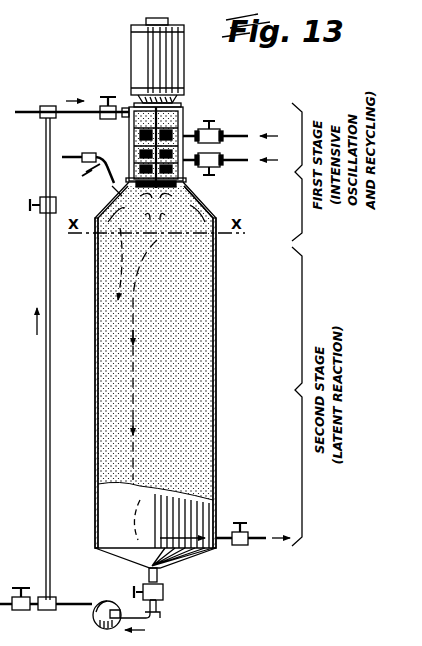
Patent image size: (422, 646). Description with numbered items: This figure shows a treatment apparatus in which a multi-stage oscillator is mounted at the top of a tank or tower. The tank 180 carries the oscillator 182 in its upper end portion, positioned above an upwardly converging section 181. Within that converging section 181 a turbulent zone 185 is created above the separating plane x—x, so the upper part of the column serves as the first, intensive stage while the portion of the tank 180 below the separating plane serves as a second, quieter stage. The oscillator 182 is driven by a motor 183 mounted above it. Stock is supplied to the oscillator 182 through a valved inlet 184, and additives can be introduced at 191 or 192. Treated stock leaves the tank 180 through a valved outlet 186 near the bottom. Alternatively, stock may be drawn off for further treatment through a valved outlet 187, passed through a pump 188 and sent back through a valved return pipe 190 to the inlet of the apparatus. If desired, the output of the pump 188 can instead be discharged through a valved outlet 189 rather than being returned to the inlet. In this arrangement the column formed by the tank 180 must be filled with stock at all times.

The tank 180 is at (217, 322).
The upwardly converging section 181 is at (198, 192).
The oscillator 182 is at (184, 122).
The motor 183 is at (136, 52).
The valved inlet 184 is at (108, 119).
The turbulent zone 185 is at (128, 208).
The valved outlet 186 is at (240, 546).
The valved outlet 187 is at (165, 596).
The pump 188 is at (112, 602).
The valved outlet 189 is at (22, 612).
The valved return pipe 190 is at (43, 214).
The additive inlet 191 is at (82, 158).
The additive inlet 192 is at (224, 135).